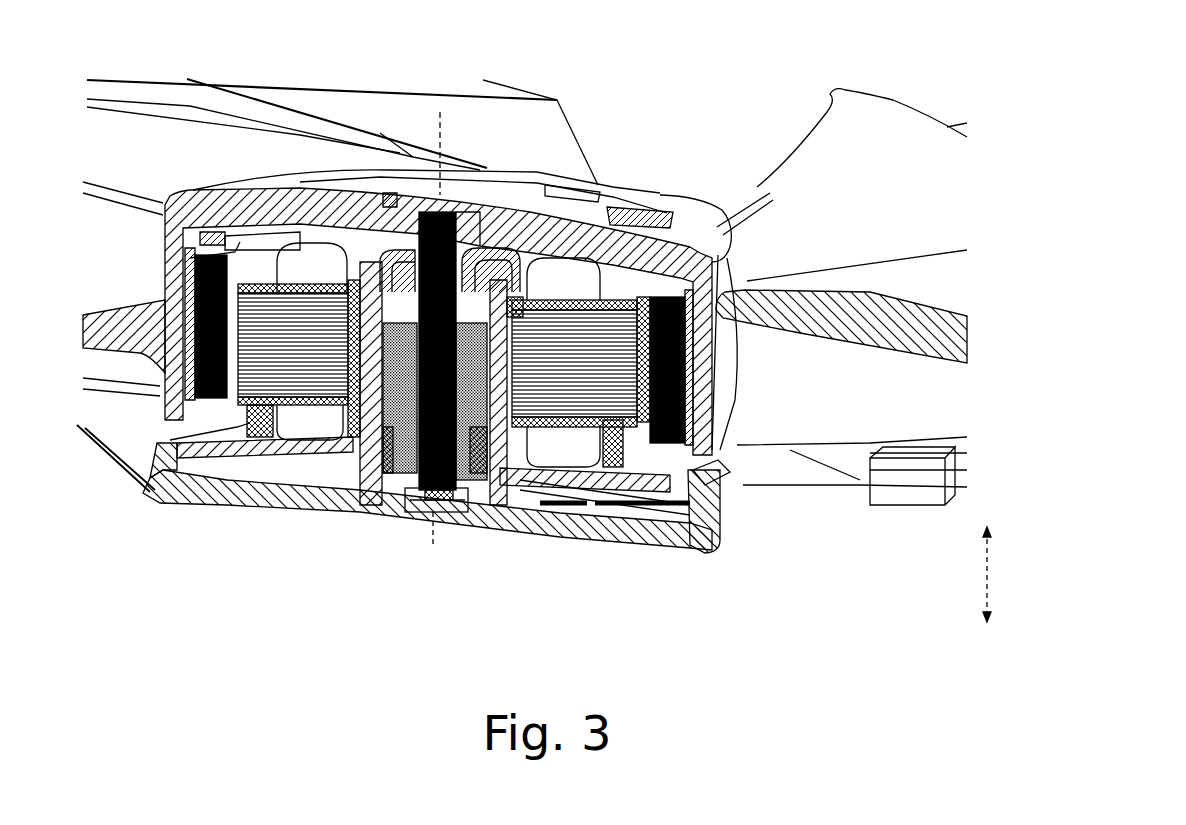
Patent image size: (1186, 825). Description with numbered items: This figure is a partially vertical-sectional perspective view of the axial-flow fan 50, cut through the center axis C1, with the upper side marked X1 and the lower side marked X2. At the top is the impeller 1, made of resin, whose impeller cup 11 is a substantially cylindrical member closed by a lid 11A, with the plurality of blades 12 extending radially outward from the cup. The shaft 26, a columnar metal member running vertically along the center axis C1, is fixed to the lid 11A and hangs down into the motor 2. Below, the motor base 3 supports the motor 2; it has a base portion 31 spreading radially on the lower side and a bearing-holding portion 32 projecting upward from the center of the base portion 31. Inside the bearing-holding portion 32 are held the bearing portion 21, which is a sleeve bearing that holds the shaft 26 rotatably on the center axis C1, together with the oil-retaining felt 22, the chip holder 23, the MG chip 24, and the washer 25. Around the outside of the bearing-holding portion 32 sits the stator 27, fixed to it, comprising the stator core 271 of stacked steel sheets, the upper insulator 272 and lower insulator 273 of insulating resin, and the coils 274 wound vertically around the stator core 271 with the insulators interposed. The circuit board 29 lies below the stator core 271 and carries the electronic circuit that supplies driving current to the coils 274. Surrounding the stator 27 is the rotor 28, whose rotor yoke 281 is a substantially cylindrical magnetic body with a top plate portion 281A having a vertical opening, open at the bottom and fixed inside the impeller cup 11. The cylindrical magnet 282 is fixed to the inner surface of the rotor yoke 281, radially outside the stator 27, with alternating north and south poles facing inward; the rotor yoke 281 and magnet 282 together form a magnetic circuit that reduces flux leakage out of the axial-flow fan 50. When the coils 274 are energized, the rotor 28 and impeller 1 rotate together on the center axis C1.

The axial-flow fan 50 is at (707, 37).
The impeller 1 is at (838, 88).
The impeller cup 11 is at (633, 190).
The lid 11A is at (577, 172).
The blades 12 is at (757, 188).
The motor 2 is at (203, 473).
The motor base 3 is at (720, 527).
The bearing portion 21 is at (396, 490).
The oil-retaining felt 22 is at (340, 513).
The chip holder 23 is at (450, 495).
The MG chip 24 is at (440, 527).
The washer 25 is at (420, 507).
The shaft 26 is at (480, 213).
The stator 27 is at (633, 470).
The stator core 271 is at (705, 371).
The upper insulator 272 is at (240, 260).
The lower insulator 273 is at (257, 487).
The coils 274 is at (673, 203).
The rotor 28 is at (705, 478).
The rotor yoke 281 is at (720, 423).
The magnet 282 is at (700, 450).
The top plate portion 281A is at (265, 235).
The circuit board 29 is at (160, 503).
The base portion 31 is at (690, 555).
The bearing-holding portion 32 is at (518, 492).
The center axis C1 is at (447, 140).
The upper side X1 is at (987, 560).
The lower side X2 is at (987, 637).